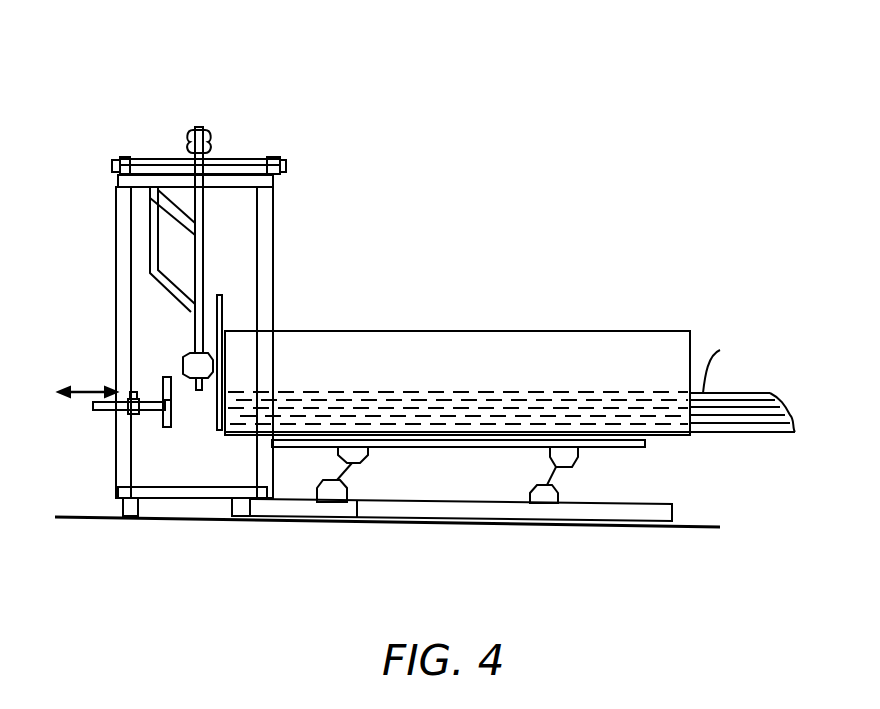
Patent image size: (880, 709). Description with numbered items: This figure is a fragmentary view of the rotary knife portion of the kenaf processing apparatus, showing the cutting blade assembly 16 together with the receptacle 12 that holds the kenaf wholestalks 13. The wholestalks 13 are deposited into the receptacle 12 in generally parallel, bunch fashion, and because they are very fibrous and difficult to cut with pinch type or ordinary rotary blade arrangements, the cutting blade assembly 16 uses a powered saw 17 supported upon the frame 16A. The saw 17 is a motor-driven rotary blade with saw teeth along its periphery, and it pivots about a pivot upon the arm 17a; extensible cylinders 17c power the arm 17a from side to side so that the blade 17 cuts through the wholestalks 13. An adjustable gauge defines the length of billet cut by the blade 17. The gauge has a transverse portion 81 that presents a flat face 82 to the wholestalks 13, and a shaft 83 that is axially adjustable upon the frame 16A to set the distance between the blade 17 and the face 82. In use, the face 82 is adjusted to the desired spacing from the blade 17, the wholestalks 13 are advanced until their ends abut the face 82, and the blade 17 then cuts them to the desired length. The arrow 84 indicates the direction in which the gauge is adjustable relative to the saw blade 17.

The receptacle 12 is at (440, 331).
The kenaf wholestalks 13 is at (768, 393).
The cutting blade assembly 16 is at (298, 48).
The frame 16A is at (273, 213).
The powered saw 17 is at (222, 302).
The arm 17a is at (205, 260).
The extensible cylinders 17c is at (208, 147).
The transverse portion 81 is at (167, 428).
The flat face 82 is at (176, 432).
The shaft 83 is at (103, 408).
The arrow 84 is at (90, 387).